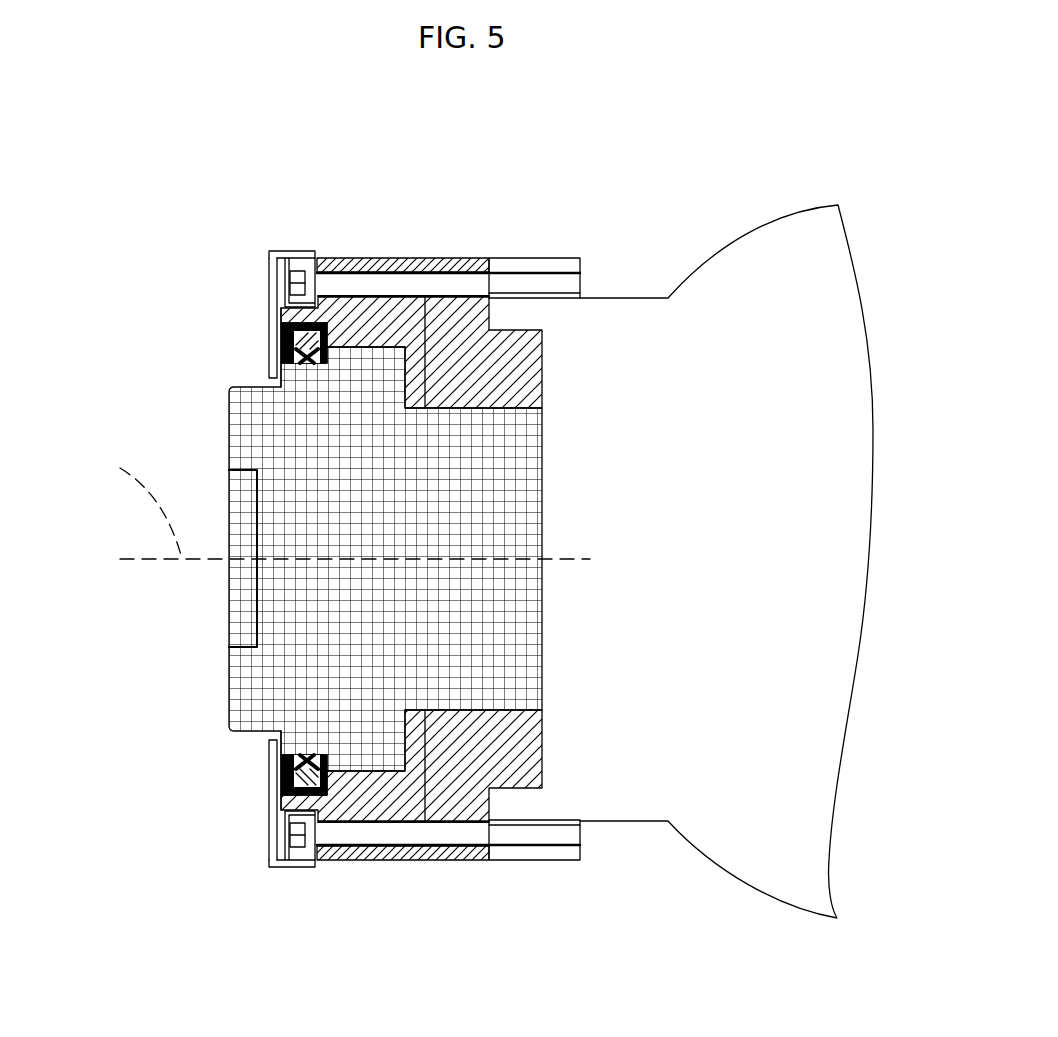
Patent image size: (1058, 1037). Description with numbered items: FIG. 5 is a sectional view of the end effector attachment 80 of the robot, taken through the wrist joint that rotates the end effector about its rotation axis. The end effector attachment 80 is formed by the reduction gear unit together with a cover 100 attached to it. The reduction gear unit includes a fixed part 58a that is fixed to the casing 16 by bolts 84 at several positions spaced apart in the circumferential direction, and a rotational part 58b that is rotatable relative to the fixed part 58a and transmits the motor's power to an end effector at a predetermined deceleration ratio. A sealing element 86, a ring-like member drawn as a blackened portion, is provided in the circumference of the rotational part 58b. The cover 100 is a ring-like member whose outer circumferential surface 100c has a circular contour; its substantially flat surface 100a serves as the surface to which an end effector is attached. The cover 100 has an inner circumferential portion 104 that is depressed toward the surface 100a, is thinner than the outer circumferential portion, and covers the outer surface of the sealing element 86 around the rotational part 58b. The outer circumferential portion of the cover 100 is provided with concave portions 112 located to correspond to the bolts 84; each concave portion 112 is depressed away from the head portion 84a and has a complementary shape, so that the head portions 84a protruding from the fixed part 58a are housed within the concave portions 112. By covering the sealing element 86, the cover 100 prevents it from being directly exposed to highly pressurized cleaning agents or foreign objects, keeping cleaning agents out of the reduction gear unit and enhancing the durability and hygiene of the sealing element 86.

The casing 16 is at (742, 252).
The end effector attachment 80 is at (133, 372).
The fixed part 58a is at (435, 790).
The rotational part 58b is at (229, 678).
The bolts 84 is at (435, 574).
The head portions 84a is at (308, 252).
The sealing element 86 is at (290, 339).
The cover 100 is at (228, 558).
The substantially flat surface 100a is at (264, 846).
The outer circumferential surface 100c is at (287, 250).
The inner circumferential portion 104 is at (279, 352).
The concave portions 112 is at (270, 251).